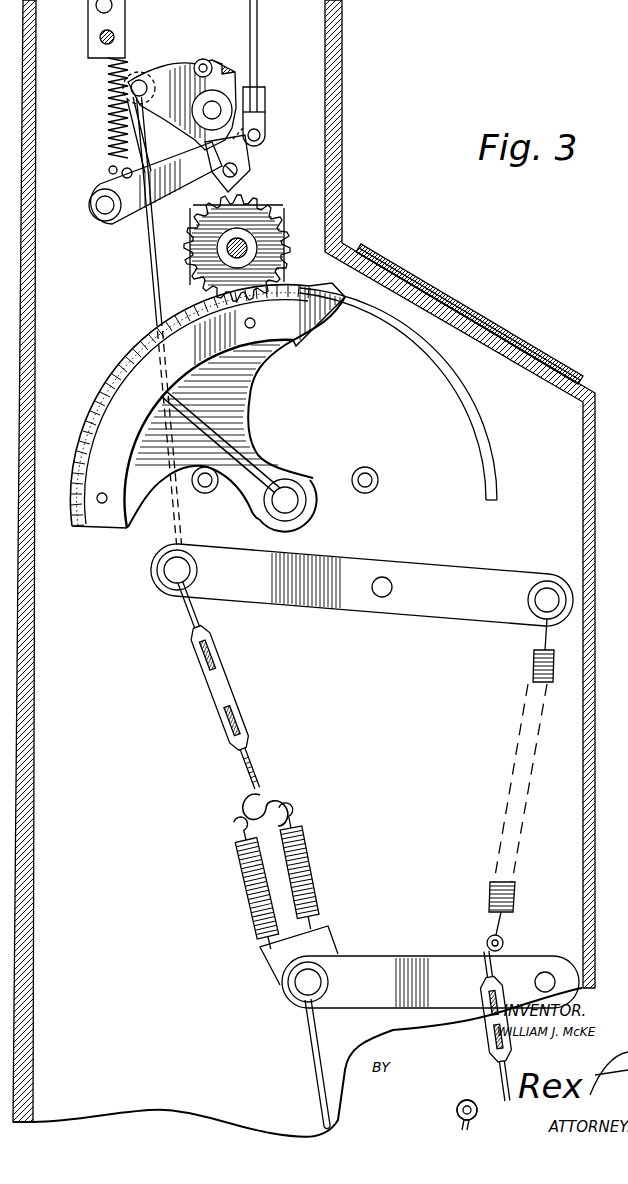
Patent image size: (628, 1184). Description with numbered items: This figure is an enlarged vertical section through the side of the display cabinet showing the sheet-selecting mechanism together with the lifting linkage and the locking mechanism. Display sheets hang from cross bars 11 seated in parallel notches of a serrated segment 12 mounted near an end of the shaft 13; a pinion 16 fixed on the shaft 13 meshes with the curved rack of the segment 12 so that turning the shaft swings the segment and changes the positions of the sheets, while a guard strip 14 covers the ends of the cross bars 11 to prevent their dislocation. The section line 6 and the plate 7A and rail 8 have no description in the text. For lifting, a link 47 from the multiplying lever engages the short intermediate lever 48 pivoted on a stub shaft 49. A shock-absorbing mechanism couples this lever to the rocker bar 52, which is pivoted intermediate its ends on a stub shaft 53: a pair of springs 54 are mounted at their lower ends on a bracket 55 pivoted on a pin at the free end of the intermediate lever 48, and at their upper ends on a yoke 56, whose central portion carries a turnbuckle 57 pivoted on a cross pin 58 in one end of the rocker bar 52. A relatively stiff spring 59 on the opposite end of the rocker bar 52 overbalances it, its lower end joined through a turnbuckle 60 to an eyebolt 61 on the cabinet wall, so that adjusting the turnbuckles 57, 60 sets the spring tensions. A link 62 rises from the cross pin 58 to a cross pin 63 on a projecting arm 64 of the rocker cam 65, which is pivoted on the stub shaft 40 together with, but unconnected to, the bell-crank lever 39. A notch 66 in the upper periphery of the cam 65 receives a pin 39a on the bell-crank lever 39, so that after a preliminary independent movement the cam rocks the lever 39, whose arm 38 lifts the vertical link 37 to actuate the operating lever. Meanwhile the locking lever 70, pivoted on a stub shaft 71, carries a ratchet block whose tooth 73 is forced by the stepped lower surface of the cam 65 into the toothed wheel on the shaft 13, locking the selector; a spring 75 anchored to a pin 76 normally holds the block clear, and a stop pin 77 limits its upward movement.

The section line 6 is at (220, 13).
The gear bracket plate 7A is at (262, 222).
The guide rail 8 is at (581, 355).
The cross bar 11 is at (207, 393).
The serrated segment 12 is at (292, 352).
The shaft 13 is at (300, 271).
The guard strip 14 is at (494, 440).
The pinion 16 is at (284, 255).
The link 37 is at (260, 46).
The arm 38 is at (248, 148).
The bell-crank lever 39 is at (212, 62).
The pin 39a is at (201, 60).
The stub shaft 40 is at (208, 114).
The link 47 is at (310, 1060).
The intermediate lever 48 is at (430, 961).
The stub shaft 49 is at (548, 973).
The rocker bar 52 is at (350, 589).
The stub shaft 53 is at (391, 582).
The spring 54 is at (312, 846).
The bracket 55 is at (266, 970).
The yoke 56 is at (268, 792).
The turnbuckle 57 is at (233, 692).
The cross pin 58 is at (172, 588).
The spring 59 is at (528, 676).
The turnbuckle 60 is at (473, 1037).
The eyebolt 61 is at (468, 1132).
The link 62 is at (153, 281).
The cross pin 63 is at (140, 78).
The projecting arm 64 is at (190, 95).
The rocker cam 65 is at (236, 84).
The notch 66 is at (222, 70).
The locking lever 70 is at (137, 200).
The stub shaft 71 is at (100, 197).
The tooth 73 is at (238, 178).
The spring 75 is at (124, 105).
The pin 76 is at (96, 8).
The stop pin 77 is at (113, 166).